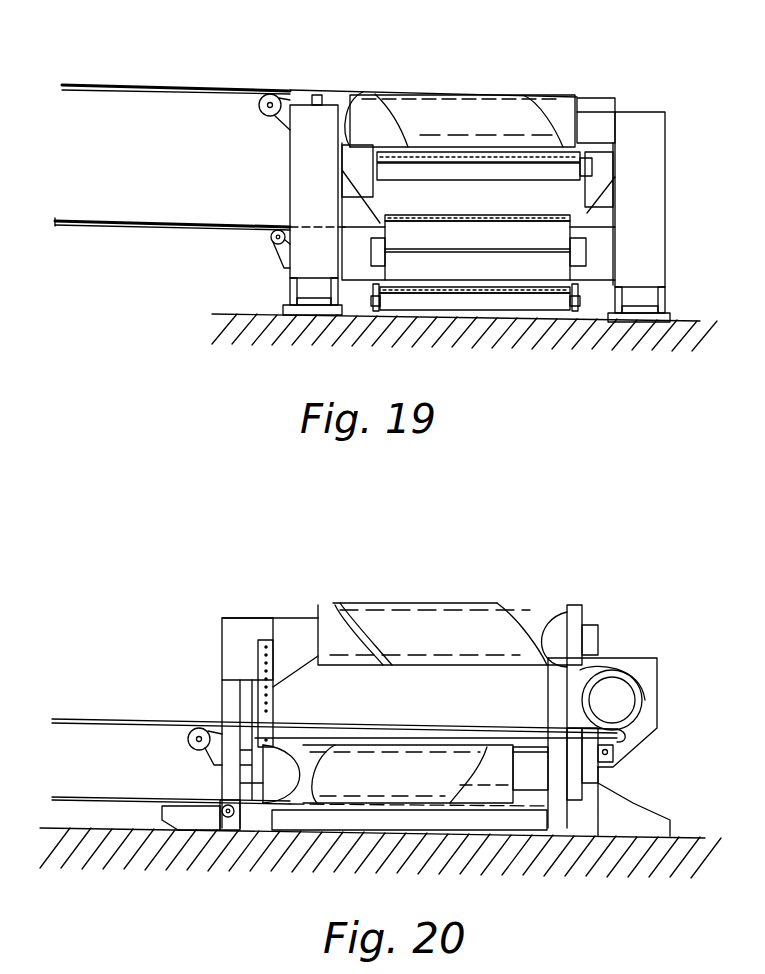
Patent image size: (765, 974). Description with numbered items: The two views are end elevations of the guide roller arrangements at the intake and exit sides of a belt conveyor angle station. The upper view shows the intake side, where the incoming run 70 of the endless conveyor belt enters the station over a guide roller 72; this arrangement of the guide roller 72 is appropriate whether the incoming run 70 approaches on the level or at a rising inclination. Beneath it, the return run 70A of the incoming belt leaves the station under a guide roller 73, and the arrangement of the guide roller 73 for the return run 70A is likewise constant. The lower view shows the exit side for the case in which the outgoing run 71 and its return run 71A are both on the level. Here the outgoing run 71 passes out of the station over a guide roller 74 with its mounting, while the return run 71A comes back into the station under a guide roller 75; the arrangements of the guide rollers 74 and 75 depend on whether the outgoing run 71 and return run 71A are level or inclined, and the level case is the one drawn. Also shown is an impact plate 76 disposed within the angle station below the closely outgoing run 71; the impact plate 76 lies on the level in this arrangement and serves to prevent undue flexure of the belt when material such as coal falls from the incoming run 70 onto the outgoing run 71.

In FIG. 19, the incoming run 70 is at (185, 72).
In FIG. 19, the return run 70A is at (105, 205).
In FIG. 19, the guide roller 72 is at (261, 110).
In FIG. 19, the guide roller 73 is at (271, 240).
In FIG. 20, the outgoing run 71 is at (65, 696).
In FIG. 20, the return run 71A is at (135, 776).
In FIG. 20, the guide roller 74 is at (188, 741).
In FIG. 20, the guide roller 75 is at (232, 818).
In FIG. 20, the impact plate 76 is at (417, 735).